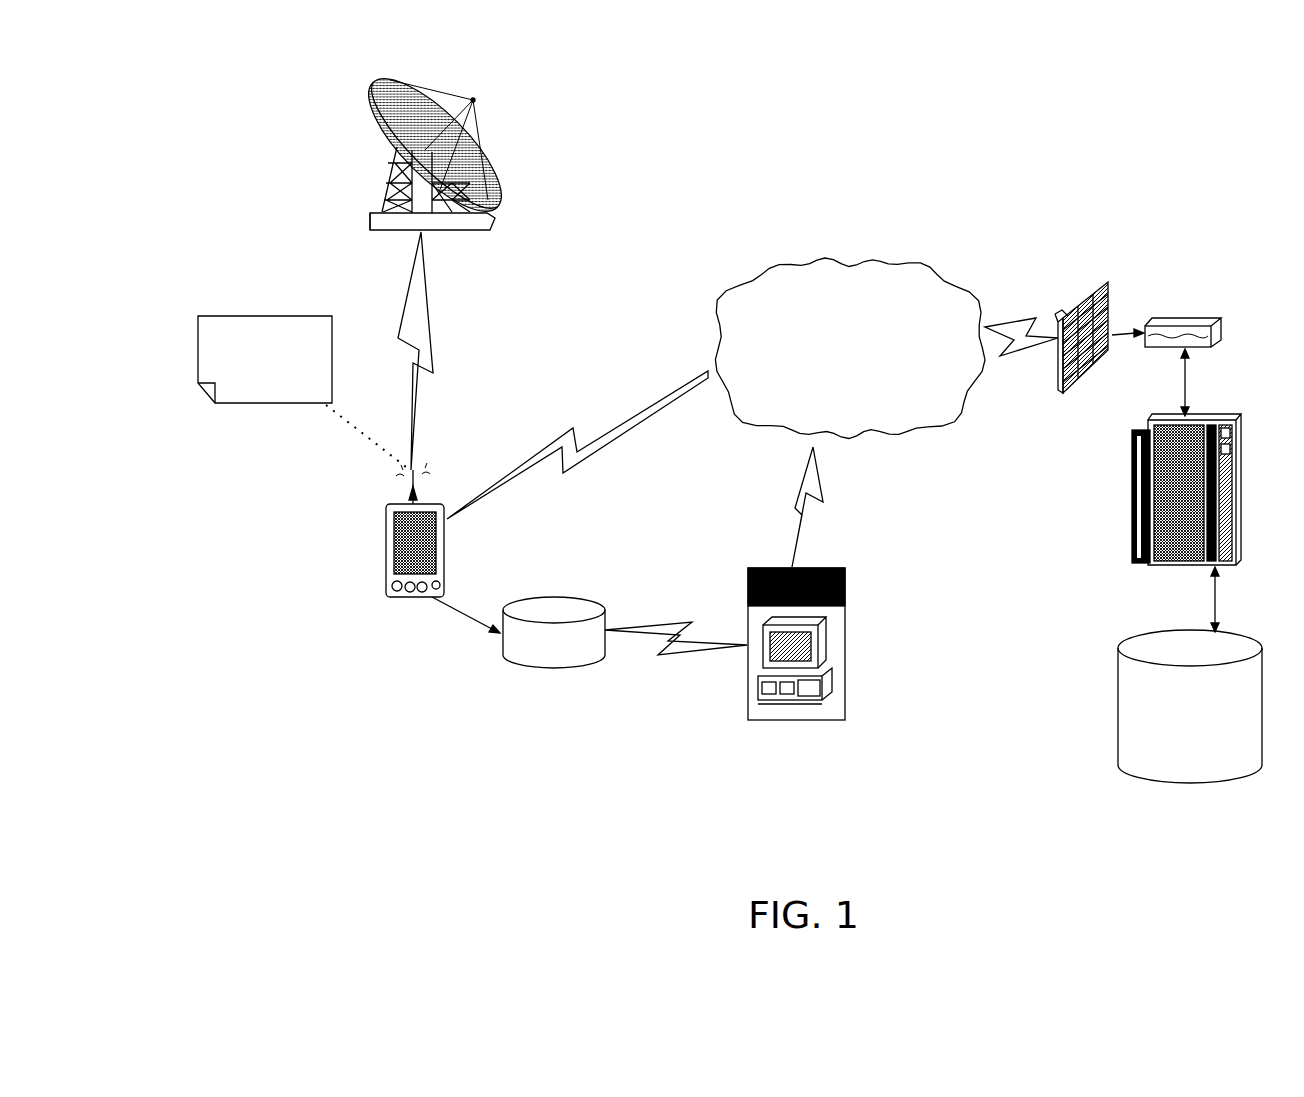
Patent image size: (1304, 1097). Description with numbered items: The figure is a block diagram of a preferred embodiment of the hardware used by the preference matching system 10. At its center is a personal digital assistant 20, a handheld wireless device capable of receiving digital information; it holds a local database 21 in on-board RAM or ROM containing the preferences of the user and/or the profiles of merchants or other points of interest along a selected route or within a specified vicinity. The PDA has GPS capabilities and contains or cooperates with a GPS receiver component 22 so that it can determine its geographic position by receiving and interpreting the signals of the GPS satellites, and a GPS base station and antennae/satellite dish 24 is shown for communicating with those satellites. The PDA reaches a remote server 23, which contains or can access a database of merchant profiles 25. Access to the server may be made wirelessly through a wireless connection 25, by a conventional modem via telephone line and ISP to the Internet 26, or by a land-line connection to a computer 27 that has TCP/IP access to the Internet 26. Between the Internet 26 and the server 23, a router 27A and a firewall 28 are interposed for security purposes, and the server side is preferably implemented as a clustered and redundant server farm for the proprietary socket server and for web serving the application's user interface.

The preference matching system 10 is at (1024, 158).
The personal digital assistant 20 is at (383, 583).
The local database 21 is at (533, 667).
The GPS receiver component 22 is at (198, 366).
The remote server 23 is at (1130, 527).
The GPS base station and antennae/satellite dish 24 is at (498, 217).
The database of merchant profiles / wireless connection 25 is at (598, 440).
The Internet 26 is at (866, 262).
The computer 27 is at (827, 721).
The router 27A is at (1220, 314).
The firewall 28 is at (1115, 306).